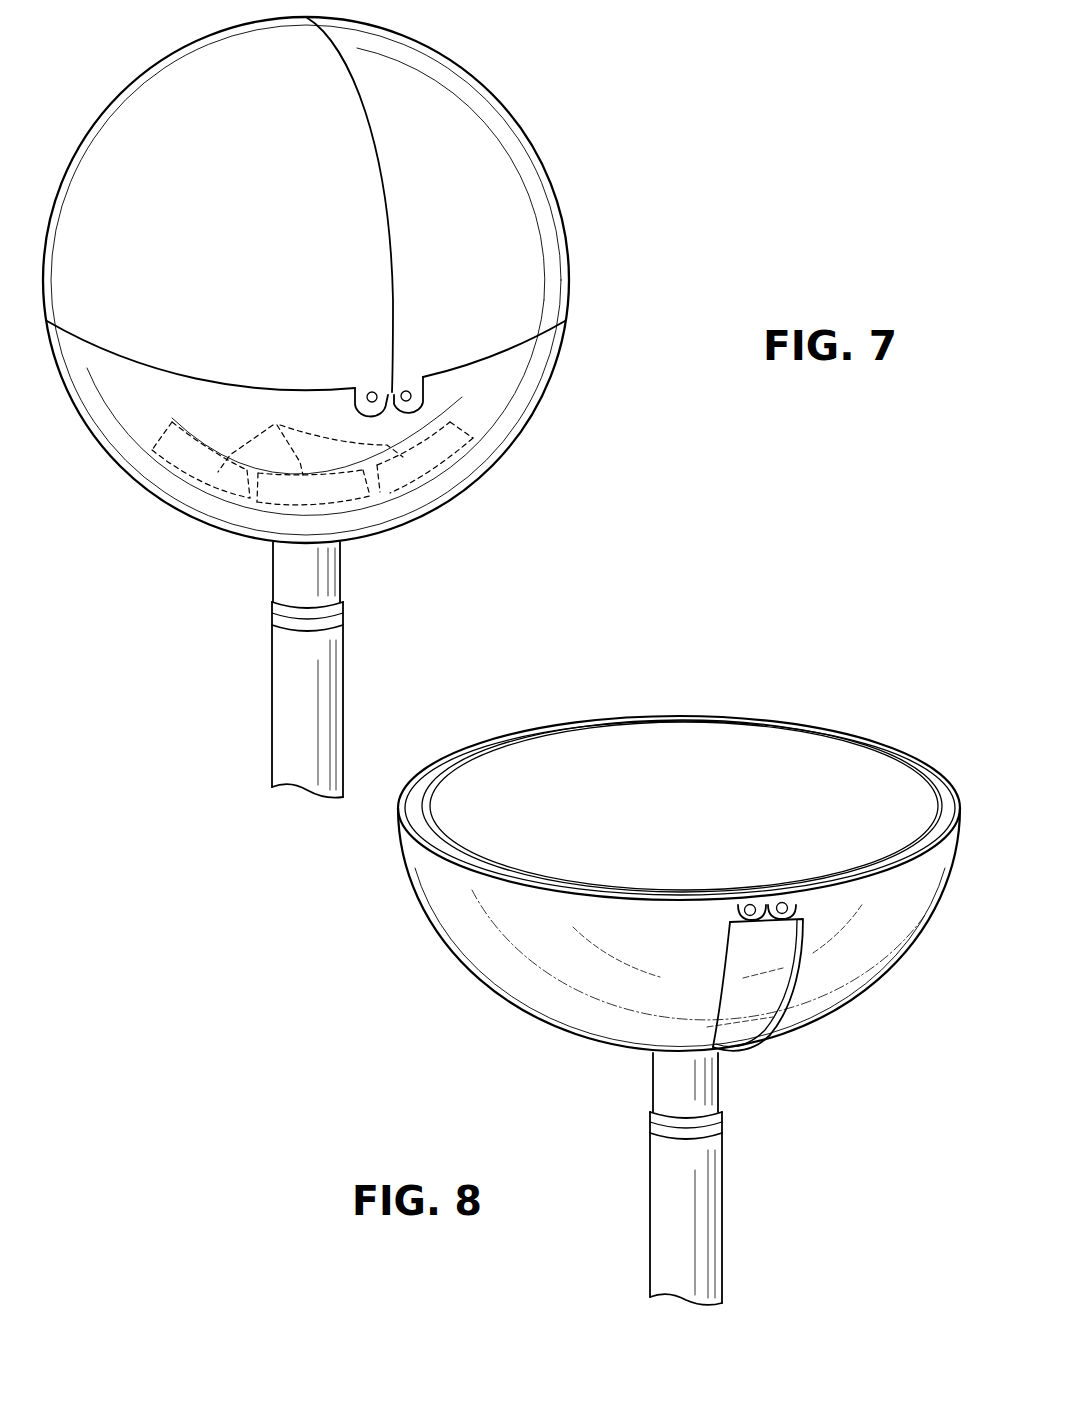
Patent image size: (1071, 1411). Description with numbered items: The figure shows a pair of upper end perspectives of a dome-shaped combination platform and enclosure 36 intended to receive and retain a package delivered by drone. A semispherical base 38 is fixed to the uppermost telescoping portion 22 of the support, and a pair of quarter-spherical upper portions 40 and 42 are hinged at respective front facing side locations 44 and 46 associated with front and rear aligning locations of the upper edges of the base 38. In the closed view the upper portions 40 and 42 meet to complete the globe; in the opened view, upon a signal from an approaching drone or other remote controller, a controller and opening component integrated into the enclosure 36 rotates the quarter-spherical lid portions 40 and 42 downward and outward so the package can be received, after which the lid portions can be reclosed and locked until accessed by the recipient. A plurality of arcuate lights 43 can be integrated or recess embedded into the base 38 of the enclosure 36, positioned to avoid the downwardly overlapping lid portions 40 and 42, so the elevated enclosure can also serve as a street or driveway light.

In FIG. 7, the uppermost telescoping portion 22 is at (272, 568).
In FIG. 8, the uppermost telescoping portion 22 is at (652, 1077).
In FIG. 7, the combination platform and enclosure 36 is at (637, 110).
In FIG. 8, the combination platform and enclosure 36 is at (361, 921).
In FIG. 7, the semispherical base 38 is at (148, 455).
In FIG. 8, the semispherical base 38 is at (550, 755).
In FIG. 7, the quarter-spherical upper portion 40 is at (138, 126).
In FIG. 8, the quarter-spherical upper portion 40 is at (513, 980).
In FIG. 7, the quarter-spherical upper portion 42 is at (555, 266).
In FIG. 8, the quarter-spherical upper portion 42 is at (865, 975).
In FIG. 7, the arcuate lights 43 is at (312, 453).
In FIG. 7, the front facing side hinge location 44 is at (372, 391).
In FIG. 8, the front facing side hinge location 44 is at (750, 905).
In FIG. 7, the front facing side hinge location 46 is at (406, 390).
In FIG. 8, the front facing side hinge location 46 is at (782, 902).